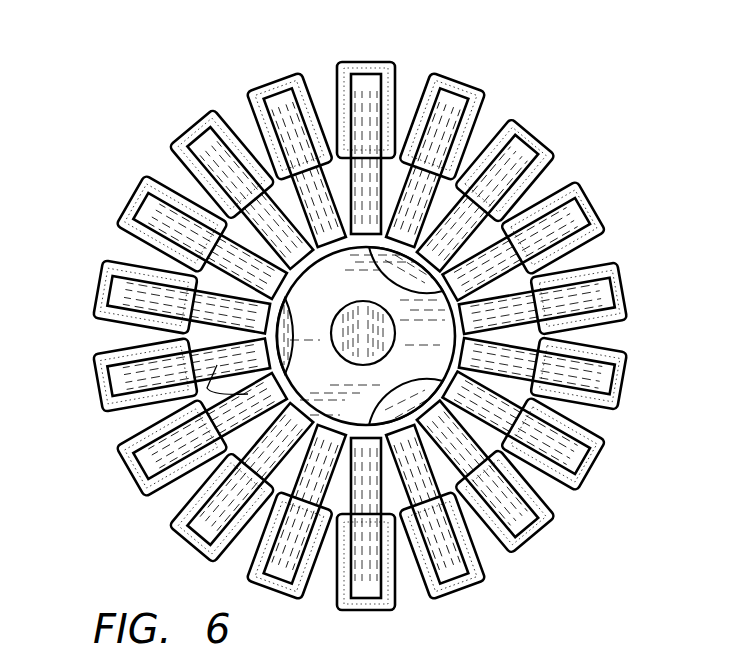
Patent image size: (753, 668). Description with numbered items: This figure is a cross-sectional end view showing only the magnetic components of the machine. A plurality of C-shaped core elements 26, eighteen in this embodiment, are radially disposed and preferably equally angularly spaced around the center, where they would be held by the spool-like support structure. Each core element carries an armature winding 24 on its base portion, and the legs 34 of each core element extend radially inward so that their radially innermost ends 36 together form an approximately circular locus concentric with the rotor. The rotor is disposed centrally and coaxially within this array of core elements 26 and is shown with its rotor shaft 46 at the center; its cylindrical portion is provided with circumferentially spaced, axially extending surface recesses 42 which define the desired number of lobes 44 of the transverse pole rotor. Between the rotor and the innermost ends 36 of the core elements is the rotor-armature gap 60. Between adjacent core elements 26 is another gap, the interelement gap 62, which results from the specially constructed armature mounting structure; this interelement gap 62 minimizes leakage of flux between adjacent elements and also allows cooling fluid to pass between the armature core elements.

The armature windings 24 is at (618, 456).
The C-shaped core elements 26 is at (433, 100).
The legs 34 is at (200, 385).
The radially innermost ends 36 is at (362, 440).
The surface recesses 42 is at (290, 340).
The lobes 44 is at (322, 372).
The rotor shaft 46 is at (377, 326).
The rotor-armature gap 60 is at (300, 262).
The interelement gap 62 is at (140, 257).